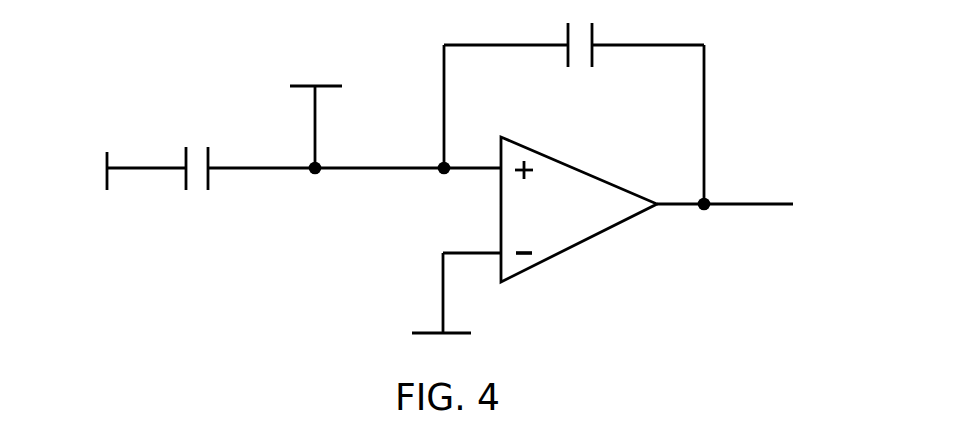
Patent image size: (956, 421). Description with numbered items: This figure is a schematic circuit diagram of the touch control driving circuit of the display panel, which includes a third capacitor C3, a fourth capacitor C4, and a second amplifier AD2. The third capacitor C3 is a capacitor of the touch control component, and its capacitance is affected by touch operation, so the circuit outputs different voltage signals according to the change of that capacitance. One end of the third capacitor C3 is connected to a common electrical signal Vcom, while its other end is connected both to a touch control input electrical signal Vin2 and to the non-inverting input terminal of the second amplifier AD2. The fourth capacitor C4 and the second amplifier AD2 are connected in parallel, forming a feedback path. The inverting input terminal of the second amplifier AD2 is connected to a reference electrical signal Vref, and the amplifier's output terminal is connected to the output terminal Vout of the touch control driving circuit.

The common electrical signal Vcom is at (109, 171).
The third capacitor C3 is at (197, 182).
The touch control input electrical signal Vin2 is at (315, 111).
The fourth capacitor C4 is at (581, 59).
The second amplifier AD2 is at (579, 209).
The reference electrical signal Vref is at (456, 308).
The output terminal Vout is at (759, 205).